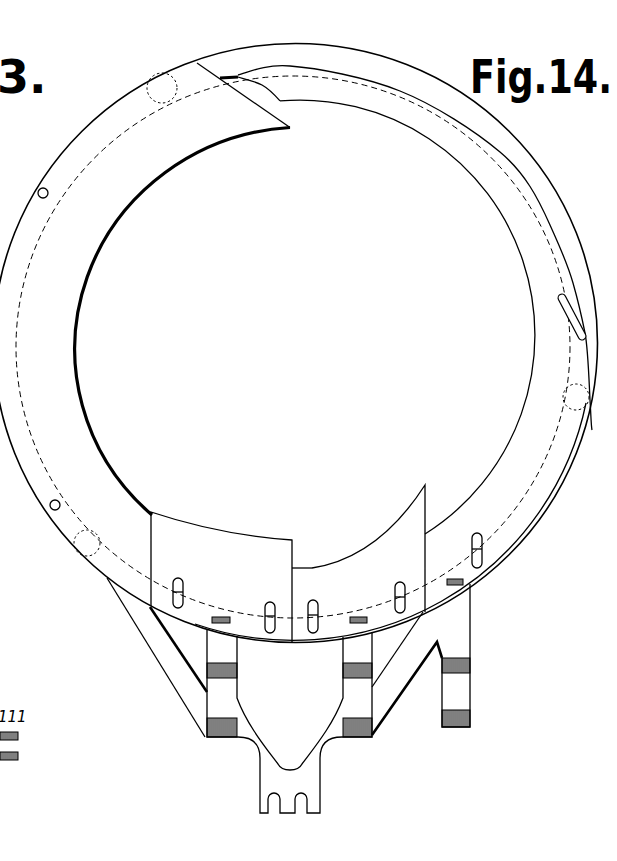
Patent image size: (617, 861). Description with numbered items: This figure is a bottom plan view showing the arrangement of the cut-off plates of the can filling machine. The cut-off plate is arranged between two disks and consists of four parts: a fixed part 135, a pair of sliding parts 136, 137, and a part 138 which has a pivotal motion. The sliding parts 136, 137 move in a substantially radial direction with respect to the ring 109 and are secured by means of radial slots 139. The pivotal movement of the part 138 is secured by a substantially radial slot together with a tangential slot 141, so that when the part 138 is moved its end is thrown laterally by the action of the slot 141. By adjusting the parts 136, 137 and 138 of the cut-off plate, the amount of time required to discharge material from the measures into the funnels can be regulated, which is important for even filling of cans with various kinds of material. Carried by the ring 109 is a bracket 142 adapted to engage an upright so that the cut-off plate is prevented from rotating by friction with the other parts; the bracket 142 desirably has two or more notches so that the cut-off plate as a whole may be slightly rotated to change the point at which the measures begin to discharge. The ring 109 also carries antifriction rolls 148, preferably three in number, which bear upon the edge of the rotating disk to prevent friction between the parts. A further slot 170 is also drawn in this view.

The ring 109 is at (561, 468).
The fixed part 135 is at (83, 259).
The sliding part 136 is at (221, 577).
The sliding part 137 is at (368, 548).
The pivotal part 138 is at (543, 367).
The radial slots 139 is at (183, 588).
The tangential slot 141 is at (563, 307).
The bracket 142 is at (267, 738).
The antifriction rolls 148 is at (157, 82).
The slot 170 is at (476, 533).